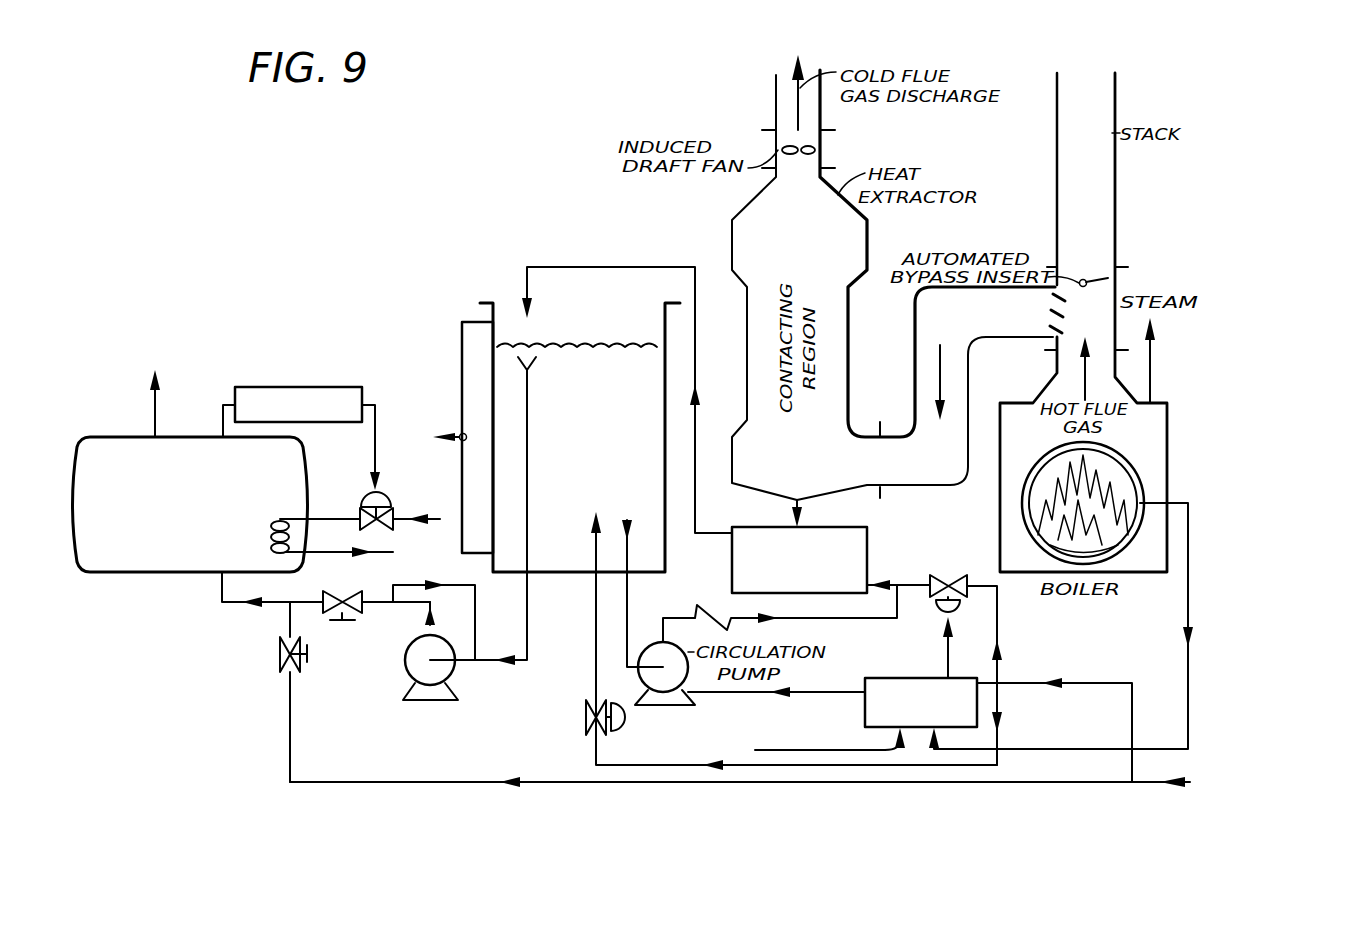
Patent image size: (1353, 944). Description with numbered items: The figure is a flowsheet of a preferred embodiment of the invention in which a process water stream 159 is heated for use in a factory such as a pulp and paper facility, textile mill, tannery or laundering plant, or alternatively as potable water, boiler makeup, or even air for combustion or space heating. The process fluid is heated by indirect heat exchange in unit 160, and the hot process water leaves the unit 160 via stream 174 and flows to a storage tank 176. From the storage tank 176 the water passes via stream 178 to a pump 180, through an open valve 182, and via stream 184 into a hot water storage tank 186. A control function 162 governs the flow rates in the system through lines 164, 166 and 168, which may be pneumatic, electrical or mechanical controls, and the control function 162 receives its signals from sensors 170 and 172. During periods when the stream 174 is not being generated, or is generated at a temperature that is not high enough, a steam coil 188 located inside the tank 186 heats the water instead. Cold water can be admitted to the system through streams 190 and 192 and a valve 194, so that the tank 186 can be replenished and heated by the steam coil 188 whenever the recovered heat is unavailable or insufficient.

The process water stream 159 is at (892, 582).
The indirect heat exchange unit 160 is at (862, 527).
The control function 162 is at (893, 678).
The control line 164 is at (945, 651).
The control line 166 is at (678, 722).
The control line 168 is at (461, 433).
The sensor 170 is at (1071, 748).
The sensor 172 is at (890, 752).
The hot process water stream 174 is at (697, 381).
The storage tank 176 is at (555, 573).
The stream 178 is at (527, 646).
The pump 180 is at (456, 685).
The open valve 182 is at (393, 621).
The stream 184 is at (277, 589).
The hot water storage tank 186 is at (138, 573).
The steam coil 188 is at (273, 517).
The cold water stream 190 is at (1152, 788).
The cold water stream 192 is at (987, 788).
The valve 194 is at (281, 673).